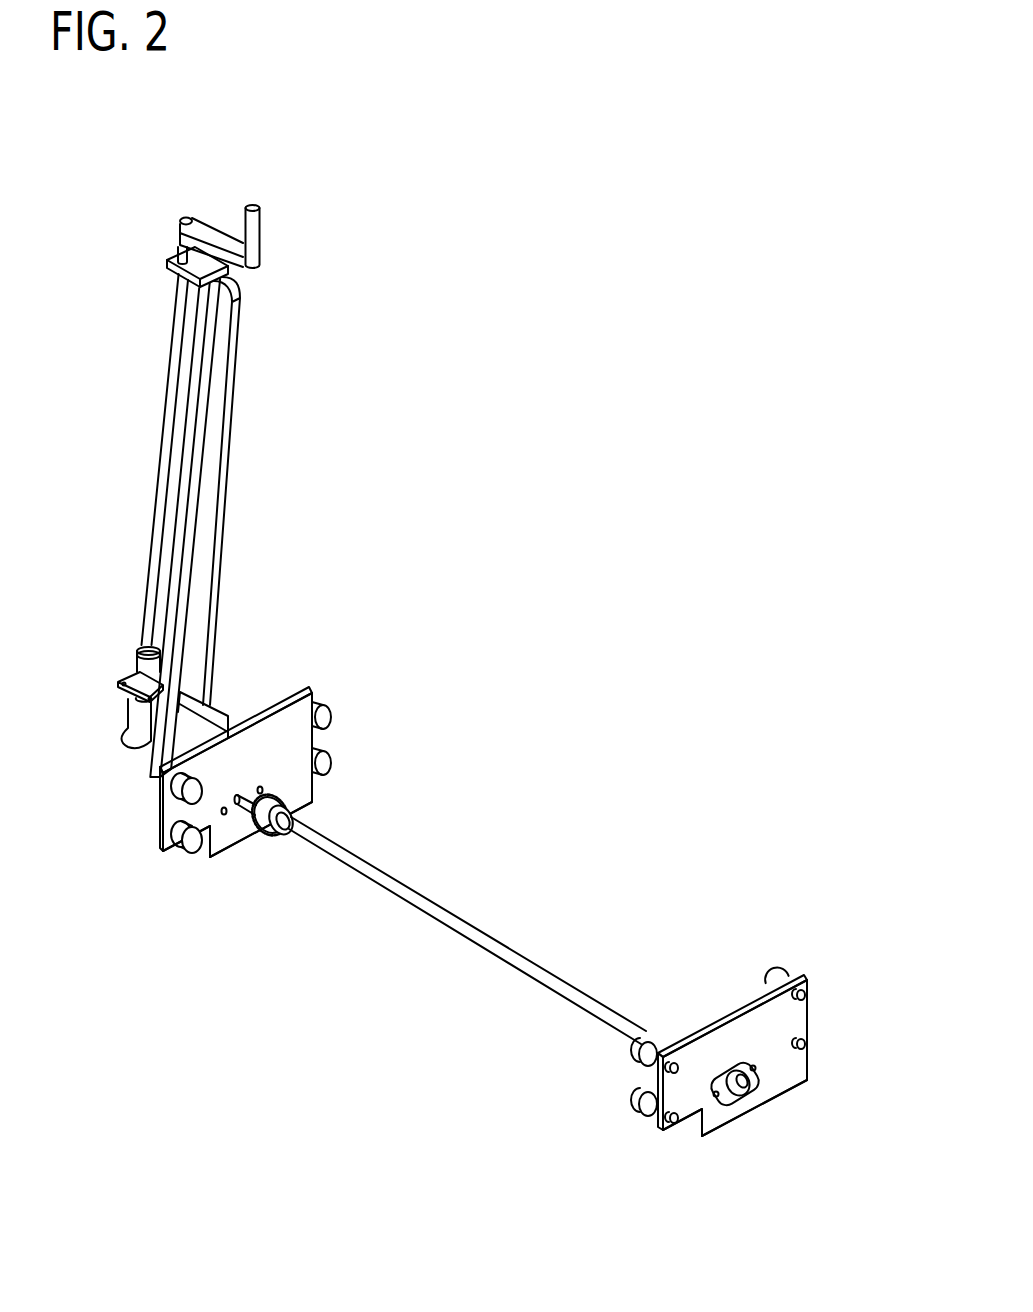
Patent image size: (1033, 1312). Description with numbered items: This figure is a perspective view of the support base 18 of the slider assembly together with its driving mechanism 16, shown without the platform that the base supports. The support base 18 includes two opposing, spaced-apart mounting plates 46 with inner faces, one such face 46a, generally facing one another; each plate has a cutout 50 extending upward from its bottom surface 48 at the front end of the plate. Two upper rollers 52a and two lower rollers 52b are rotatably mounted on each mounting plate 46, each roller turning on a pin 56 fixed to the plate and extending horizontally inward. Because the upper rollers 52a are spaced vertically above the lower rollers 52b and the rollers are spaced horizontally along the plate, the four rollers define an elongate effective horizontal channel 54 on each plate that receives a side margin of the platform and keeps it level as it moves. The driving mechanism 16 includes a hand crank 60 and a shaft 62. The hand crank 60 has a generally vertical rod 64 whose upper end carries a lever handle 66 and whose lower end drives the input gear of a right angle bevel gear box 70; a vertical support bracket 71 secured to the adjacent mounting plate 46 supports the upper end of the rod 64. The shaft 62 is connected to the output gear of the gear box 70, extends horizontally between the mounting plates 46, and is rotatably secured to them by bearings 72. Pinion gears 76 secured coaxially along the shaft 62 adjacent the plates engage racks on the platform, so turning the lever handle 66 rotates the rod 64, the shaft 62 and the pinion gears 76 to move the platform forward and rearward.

The driving mechanism 16 is at (80, 575).
The support base 18 is at (815, 1102).
The mounting plate 46 is at (307, 693).
The top edge of mounting plate 46a is at (260, 760).
The bottom surface 48 is at (245, 838).
The cutout 50 is at (206, 858).
The upper roller 52a is at (331, 716).
The lower roller 52b is at (331, 765).
The effective horizontal channel 54 is at (168, 817).
The pin 56 is at (806, 1041).
The hand crank 60 is at (150, 446).
The shaft 62 is at (498, 942).
The vertical rod 64 is at (173, 340).
The lever handle 66 is at (214, 233).
The right angle bevel gear box 70 is at (133, 710).
The vertical support bracket 71 is at (213, 432).
The bearing 72 is at (742, 1100).
The pinion gear 76 is at (292, 821).